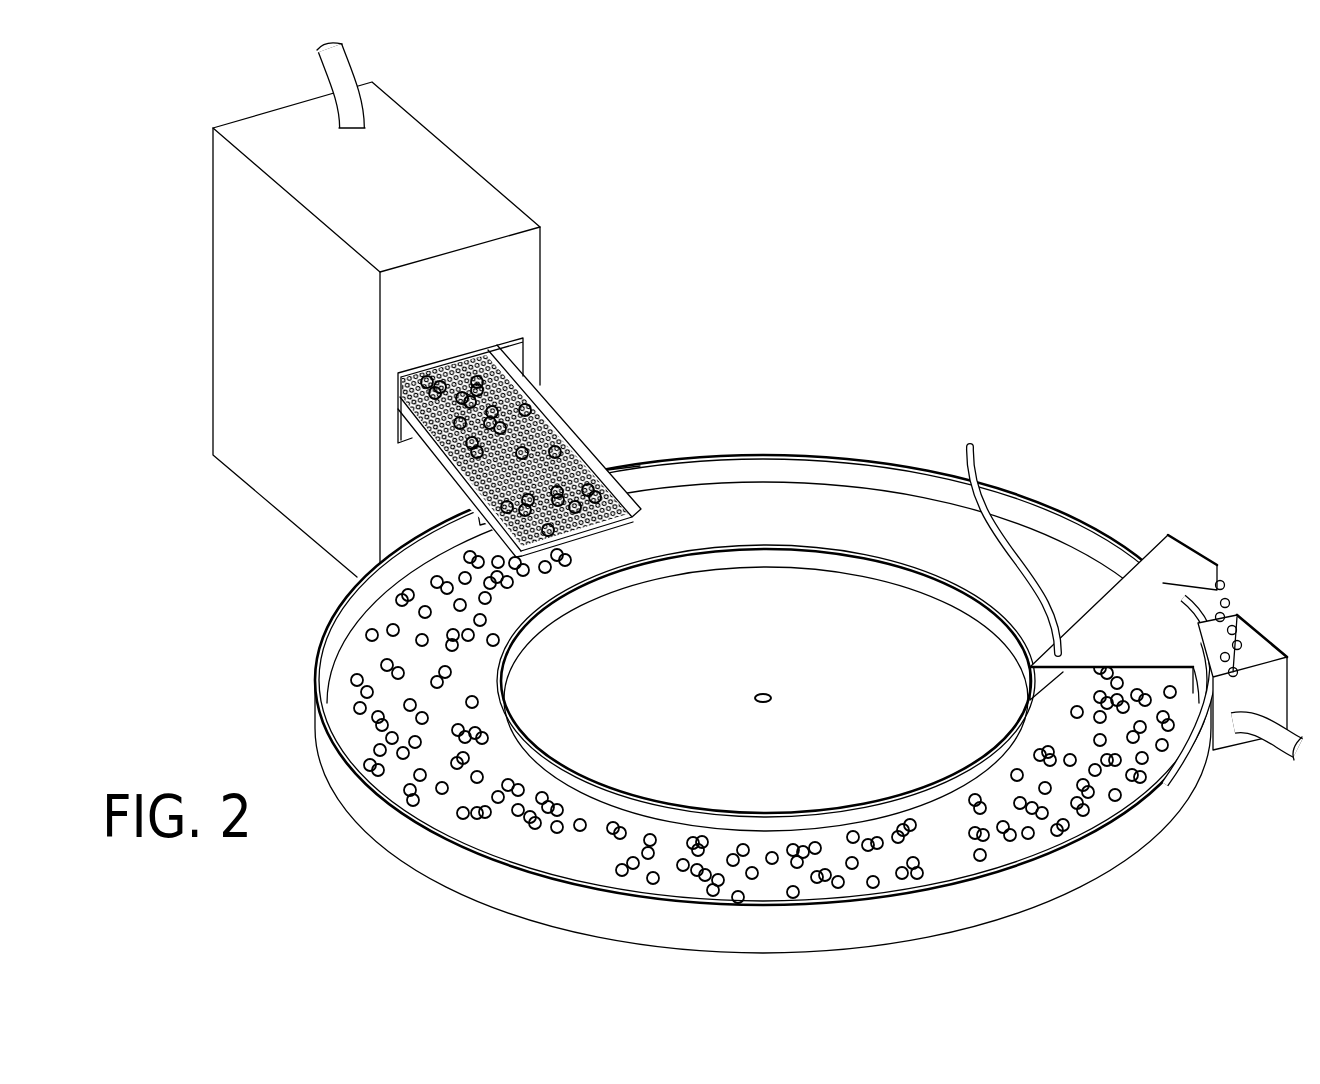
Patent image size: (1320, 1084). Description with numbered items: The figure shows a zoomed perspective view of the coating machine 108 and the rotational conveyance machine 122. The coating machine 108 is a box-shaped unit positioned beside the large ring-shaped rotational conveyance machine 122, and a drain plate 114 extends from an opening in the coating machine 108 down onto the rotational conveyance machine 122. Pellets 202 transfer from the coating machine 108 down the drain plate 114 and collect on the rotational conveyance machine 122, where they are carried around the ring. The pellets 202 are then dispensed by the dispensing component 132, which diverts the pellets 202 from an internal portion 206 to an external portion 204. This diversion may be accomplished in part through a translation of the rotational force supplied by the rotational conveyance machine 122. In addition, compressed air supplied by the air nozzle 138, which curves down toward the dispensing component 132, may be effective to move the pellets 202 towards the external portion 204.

The coating machine 108 is at (447, 165).
The drain plate 114 is at (541, 428).
The rotational conveyance machine 122 is at (357, 658).
The dispensing component 132 is at (1115, 622).
The air nozzle 138 is at (1055, 632).
The pellets 202 is at (583, 823).
The external portion 204 is at (1185, 556).
The internal portion 206 is at (1068, 686).